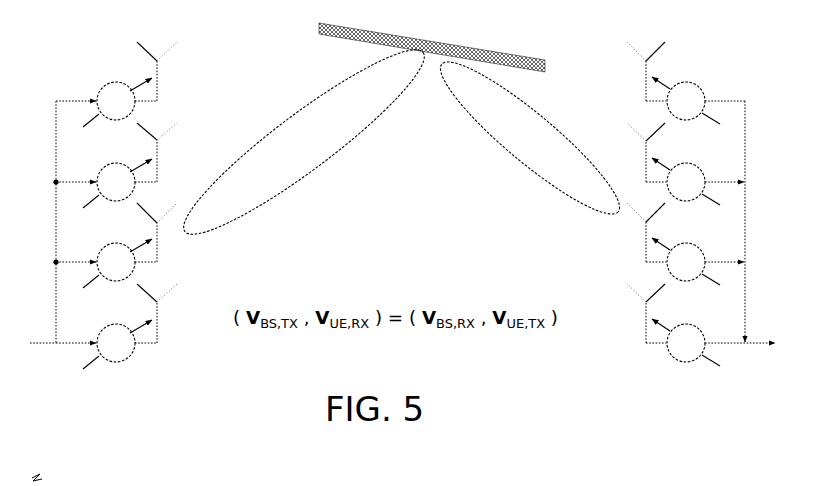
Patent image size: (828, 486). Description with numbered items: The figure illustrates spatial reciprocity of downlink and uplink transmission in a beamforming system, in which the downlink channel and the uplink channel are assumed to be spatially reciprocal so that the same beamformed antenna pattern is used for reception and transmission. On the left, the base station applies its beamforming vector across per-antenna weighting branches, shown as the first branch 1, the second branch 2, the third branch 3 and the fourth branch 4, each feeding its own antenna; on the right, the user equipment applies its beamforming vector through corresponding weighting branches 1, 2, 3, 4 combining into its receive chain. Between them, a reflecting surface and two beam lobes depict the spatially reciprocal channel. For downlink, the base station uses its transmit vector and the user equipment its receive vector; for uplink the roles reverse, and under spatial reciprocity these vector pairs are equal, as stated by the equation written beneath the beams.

The first antenna branch (V_BS,1 / V_UE,1 precoder weight) 1 is at (400, 84).
The second antenna branch (V_BS,2 / V_UE,2 precoder weight) 2 is at (400, 165).
The third antenna branch (V_BS,3 / V_UE,3 precoder weight) 3 is at (400, 245).
The fourth antenna branch (V_BS,4 / V_UE,4 precoder weight) 4 is at (415, 326).